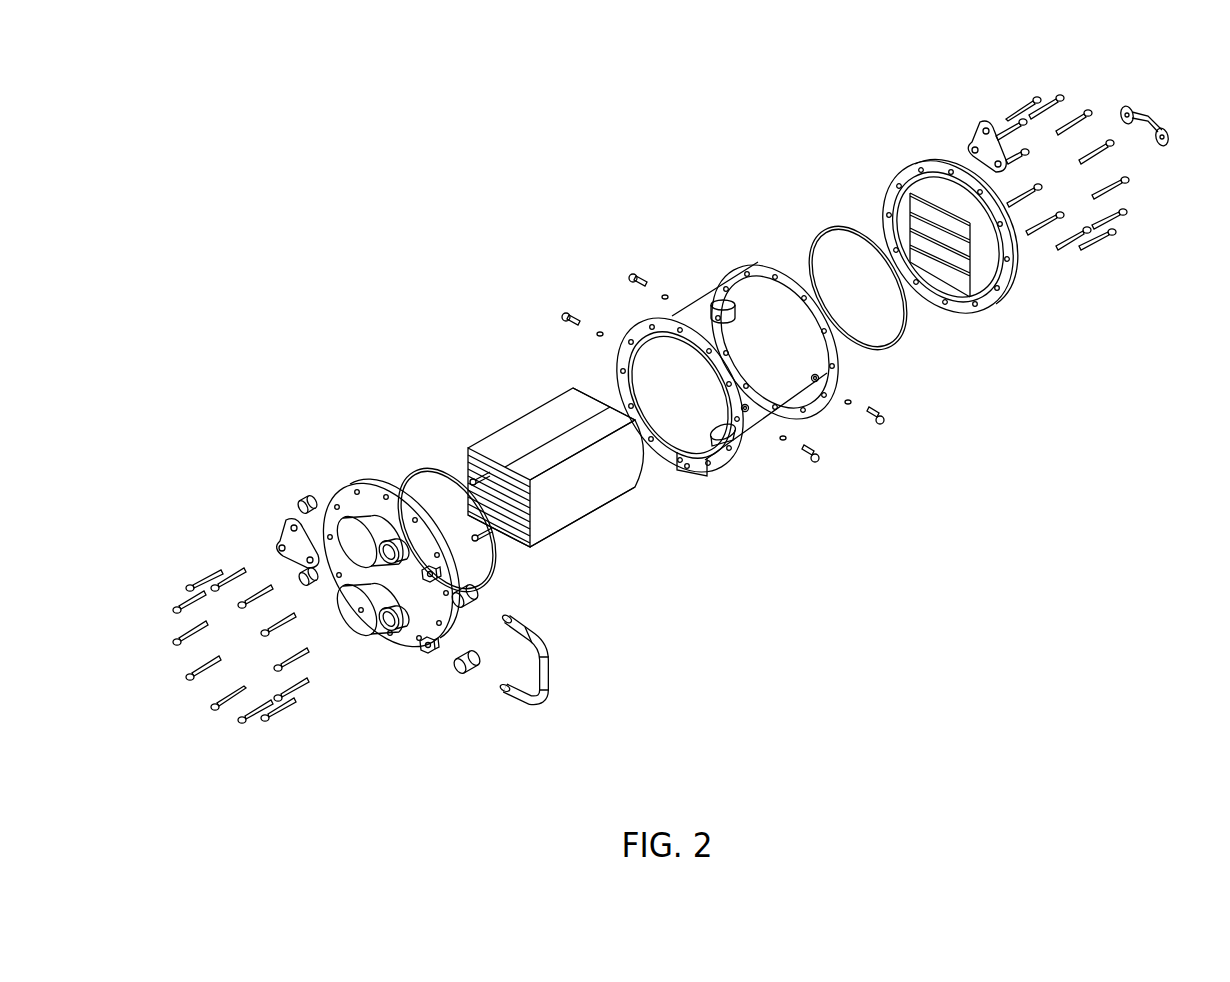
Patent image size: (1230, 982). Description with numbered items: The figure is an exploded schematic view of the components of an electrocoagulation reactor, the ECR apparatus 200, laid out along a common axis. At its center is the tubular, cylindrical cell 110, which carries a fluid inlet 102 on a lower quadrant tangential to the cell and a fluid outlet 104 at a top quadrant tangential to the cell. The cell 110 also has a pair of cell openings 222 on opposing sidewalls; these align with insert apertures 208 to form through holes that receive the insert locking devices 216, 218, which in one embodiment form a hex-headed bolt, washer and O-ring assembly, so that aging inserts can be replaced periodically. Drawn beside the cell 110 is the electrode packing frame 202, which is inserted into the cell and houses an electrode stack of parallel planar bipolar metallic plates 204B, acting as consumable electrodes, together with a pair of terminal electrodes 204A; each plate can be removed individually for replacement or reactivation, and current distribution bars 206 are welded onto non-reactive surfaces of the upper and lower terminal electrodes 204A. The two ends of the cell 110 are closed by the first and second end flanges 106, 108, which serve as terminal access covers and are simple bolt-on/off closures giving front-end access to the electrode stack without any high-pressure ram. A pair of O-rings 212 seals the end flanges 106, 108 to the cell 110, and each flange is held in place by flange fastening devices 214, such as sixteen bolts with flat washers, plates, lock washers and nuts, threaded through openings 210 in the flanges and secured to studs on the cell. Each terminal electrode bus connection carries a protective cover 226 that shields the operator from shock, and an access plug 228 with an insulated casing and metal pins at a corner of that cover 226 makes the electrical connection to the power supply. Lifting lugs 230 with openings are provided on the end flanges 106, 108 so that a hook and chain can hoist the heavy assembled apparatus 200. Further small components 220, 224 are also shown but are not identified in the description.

The ECR apparatus 200 is at (691, 108).
The fluid inlet 102 is at (727, 374).
The fluid outlet 104 is at (719, 304).
The first end flange 106 is at (359, 571).
The second end flange 108 is at (1010, 283).
The tubular cylindrical cell 110 is at (755, 300).
The electrode packing frame 202 is at (560, 468).
The terminal electrodes 204A is at (548, 410).
The planar bipolar metallic plates 204B is at (520, 532).
The current distribution bars 206 is at (592, 400).
The insert apertures 208 is at (625, 470).
The openings 210 is at (970, 315).
The O-rings 212 is at (833, 232).
The flange fastening devices 214 is at (190, 680).
The insert locking device 216 is at (662, 297).
The insert locking device 218 is at (630, 276).
The tube 220 is at (549, 655).
The cell openings 222 is at (817, 382).
The adapter fitting 224 is at (466, 674).
The protective cover 226 is at (362, 622).
The access plug 228 is at (300, 504).
The lifting lugs 230 is at (280, 545).